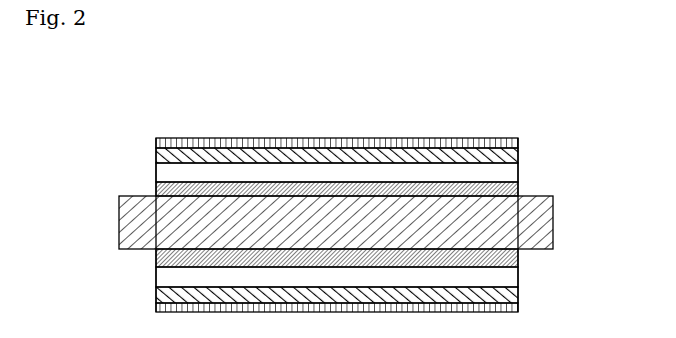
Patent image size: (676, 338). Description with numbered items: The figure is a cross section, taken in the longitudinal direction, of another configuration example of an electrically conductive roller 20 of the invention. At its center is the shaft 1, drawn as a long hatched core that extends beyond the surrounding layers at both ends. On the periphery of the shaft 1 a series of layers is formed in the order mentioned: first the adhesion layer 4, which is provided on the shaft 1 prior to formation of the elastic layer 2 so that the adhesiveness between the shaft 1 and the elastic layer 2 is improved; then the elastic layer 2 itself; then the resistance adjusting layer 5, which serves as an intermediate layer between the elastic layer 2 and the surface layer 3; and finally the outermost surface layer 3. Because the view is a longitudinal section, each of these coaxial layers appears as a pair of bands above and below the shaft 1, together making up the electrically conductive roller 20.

The shaft 1 is at (553, 223).
The elastic layer 2 is at (518, 172).
The surface layer 3 is at (377, 137).
The adhesion layer 4 is at (518, 187).
The resistance adjusting layer 5 is at (518, 155).
The electrically conductive roller 20 is at (256, 126).